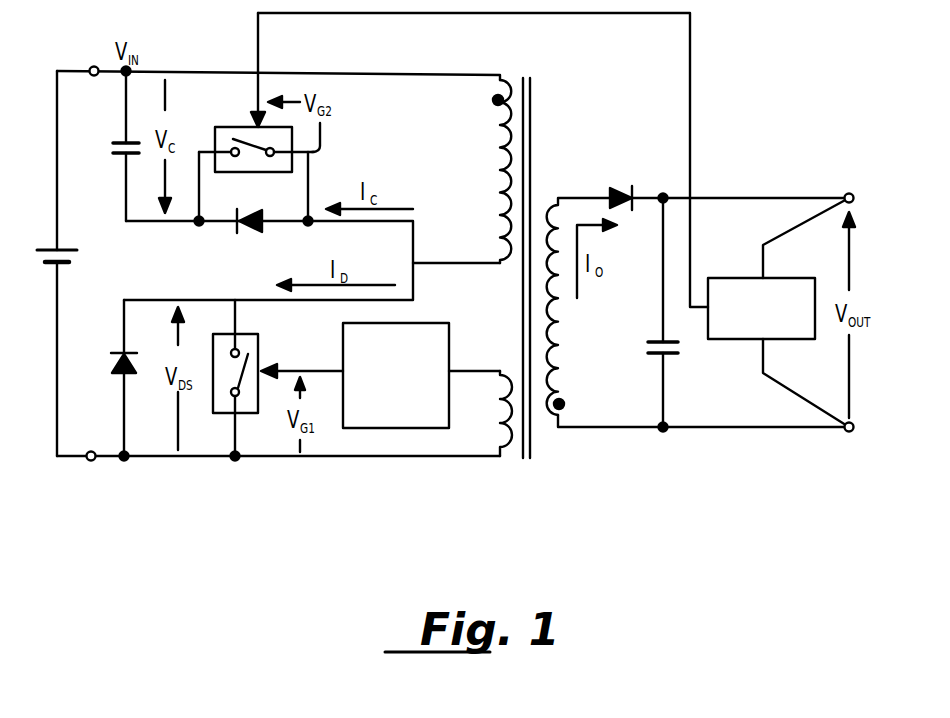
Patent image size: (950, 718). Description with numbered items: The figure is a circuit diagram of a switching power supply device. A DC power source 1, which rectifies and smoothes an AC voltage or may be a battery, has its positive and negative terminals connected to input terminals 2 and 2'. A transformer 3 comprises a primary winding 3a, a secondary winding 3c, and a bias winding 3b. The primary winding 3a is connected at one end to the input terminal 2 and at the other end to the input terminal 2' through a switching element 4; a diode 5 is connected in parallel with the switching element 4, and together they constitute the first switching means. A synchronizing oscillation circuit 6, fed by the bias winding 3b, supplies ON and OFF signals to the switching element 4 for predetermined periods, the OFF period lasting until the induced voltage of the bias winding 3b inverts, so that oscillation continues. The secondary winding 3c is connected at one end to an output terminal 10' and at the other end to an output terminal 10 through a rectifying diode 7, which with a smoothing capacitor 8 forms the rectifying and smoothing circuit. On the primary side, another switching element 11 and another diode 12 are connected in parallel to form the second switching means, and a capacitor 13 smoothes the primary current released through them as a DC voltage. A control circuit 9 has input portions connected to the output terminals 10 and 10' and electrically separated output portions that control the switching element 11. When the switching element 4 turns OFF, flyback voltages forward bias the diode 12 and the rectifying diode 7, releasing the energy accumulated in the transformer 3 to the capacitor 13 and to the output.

The DC power source 1 is at (44, 246).
The input terminal 2 is at (80, 45).
The input terminal 2' is at (107, 479).
The transformer 3 is at (533, 88).
The primary winding 3a is at (503, 173).
The bias winding 3b is at (500, 388).
The secondary winding 3c is at (563, 353).
The switching element 4 is at (258, 345).
The diode 5 is at (117, 350).
The synchronizing oscillation circuit 6 is at (432, 328).
The rectifying diode 7 is at (636, 191).
The smoothing capacitor 8 is at (672, 356).
The control circuit 9 is at (740, 278).
The output terminal 10 is at (837, 172).
The output terminal 10' is at (835, 465).
The switching element 11 is at (256, 162).
The diode 12 is at (233, 230).
The capacitor 13 is at (115, 160).